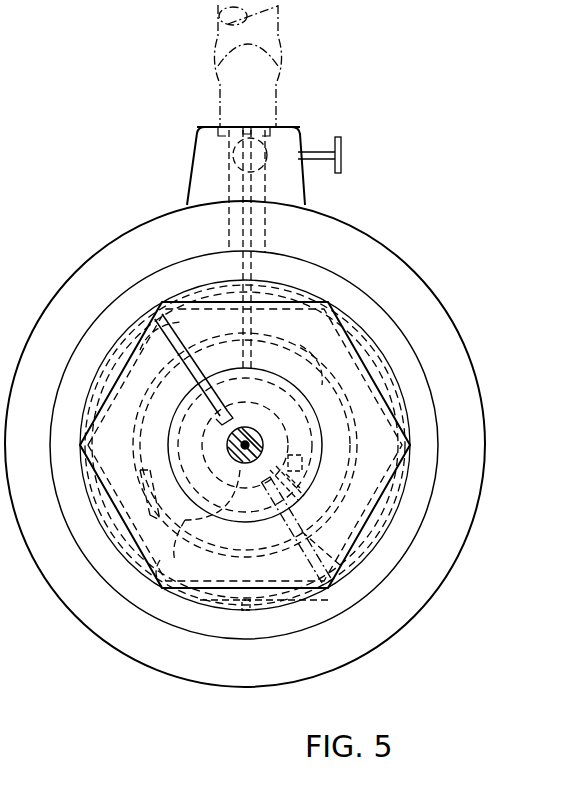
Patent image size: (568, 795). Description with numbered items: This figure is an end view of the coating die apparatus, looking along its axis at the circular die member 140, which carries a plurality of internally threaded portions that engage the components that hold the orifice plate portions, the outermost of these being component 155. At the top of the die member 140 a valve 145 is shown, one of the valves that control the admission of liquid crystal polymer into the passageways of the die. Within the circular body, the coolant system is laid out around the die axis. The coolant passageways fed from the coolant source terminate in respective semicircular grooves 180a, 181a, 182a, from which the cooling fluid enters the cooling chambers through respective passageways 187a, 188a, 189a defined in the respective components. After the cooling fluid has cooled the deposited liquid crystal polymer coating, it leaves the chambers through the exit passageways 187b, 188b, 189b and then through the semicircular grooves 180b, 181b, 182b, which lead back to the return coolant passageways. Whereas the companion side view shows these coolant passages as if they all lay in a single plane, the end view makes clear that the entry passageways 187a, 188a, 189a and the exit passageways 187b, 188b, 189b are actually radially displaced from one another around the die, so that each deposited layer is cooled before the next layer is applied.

The die member 140 is at (170, 681).
The valve 145 is at (341, 138).
The component 155 is at (408, 443).
The semicircular groove 180a is at (183, 522).
The semicircular groove 180b is at (302, 372).
The semicircular groove 181a is at (160, 561).
The semicircular groove 181b is at (318, 340).
The semicircular groove 182a is at (186, 616).
The semicircular groove 182b is at (283, 275).
The passageway 187a is at (311, 452).
The passageway 187b is at (166, 451).
The passageway 188a is at (413, 481).
The passageway 188b is at (183, 369).
The passageway 189a is at (384, 560).
The passageway 189b is at (180, 338).